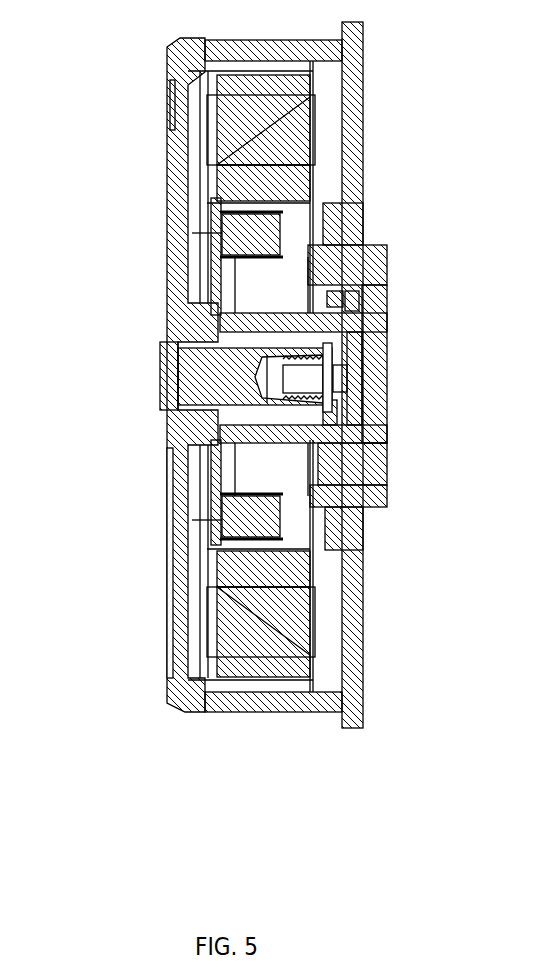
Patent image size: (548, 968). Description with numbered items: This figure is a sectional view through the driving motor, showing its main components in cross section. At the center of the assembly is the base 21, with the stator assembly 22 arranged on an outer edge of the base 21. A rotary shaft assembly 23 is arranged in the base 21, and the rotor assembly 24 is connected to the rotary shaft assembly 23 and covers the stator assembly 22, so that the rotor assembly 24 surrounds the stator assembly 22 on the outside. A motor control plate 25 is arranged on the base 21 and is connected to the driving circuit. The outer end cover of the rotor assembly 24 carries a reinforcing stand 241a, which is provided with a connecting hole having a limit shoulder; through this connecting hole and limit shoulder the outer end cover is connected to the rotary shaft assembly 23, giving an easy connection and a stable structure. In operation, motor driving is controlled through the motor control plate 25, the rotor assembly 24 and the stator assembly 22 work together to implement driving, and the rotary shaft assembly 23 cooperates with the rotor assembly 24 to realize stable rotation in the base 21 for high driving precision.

The base 21 is at (385, 247).
The stator assembly 22 is at (317, 152).
The rotary shaft assembly 23 is at (245, 352).
The rotor assembly 24 is at (180, 548).
The reinforcing stand 241a is at (170, 448).
The motor control plate 25 is at (213, 262).